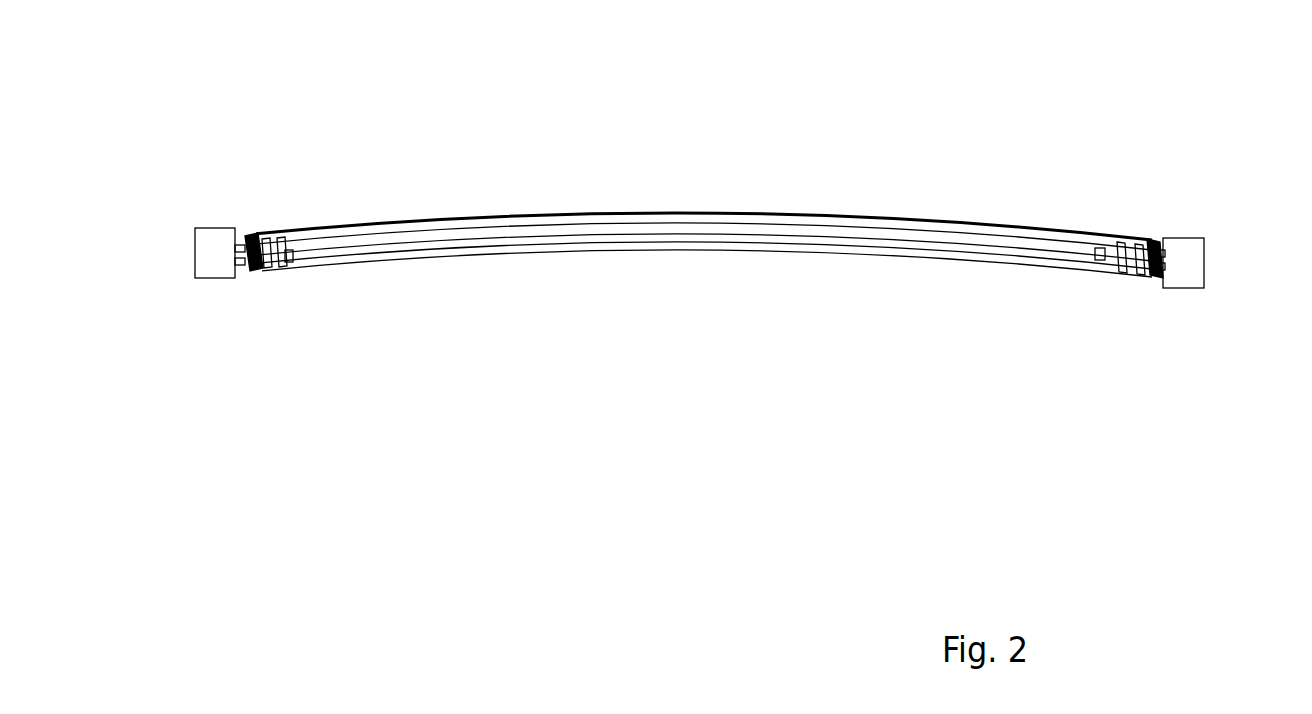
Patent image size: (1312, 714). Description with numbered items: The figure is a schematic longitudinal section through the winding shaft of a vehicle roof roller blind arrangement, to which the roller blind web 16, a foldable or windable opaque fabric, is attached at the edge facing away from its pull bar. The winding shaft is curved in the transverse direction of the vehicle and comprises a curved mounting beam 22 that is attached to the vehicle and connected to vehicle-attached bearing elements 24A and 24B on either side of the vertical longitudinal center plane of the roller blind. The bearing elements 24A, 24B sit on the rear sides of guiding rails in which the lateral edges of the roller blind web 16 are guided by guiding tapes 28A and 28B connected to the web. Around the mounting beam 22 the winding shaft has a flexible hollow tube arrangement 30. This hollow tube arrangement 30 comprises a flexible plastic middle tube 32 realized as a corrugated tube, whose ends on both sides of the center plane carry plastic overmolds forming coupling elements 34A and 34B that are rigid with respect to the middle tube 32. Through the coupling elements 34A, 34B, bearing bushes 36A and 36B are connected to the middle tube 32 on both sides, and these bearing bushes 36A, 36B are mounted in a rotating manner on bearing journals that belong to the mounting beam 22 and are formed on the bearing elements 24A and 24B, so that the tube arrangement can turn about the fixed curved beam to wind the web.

The roller blind web 16 is at (822, 214).
The curved mounting beam 22 is at (518, 240).
The flexible plastic middle tube 32 is at (857, 253).
The flexible hollow tube arrangement 30 is at (643, 252).
The bearing element 24A is at (213, 238).
The bearing element 24B is at (1188, 253).
The guiding tape 28A is at (248, 238).
The guiding tape 28B is at (1153, 243).
The coupling element 34A is at (285, 270).
The coupling element 34B is at (1113, 275).
The bearing bush 36A is at (246, 272).
The bearing bush 36B is at (1152, 277).